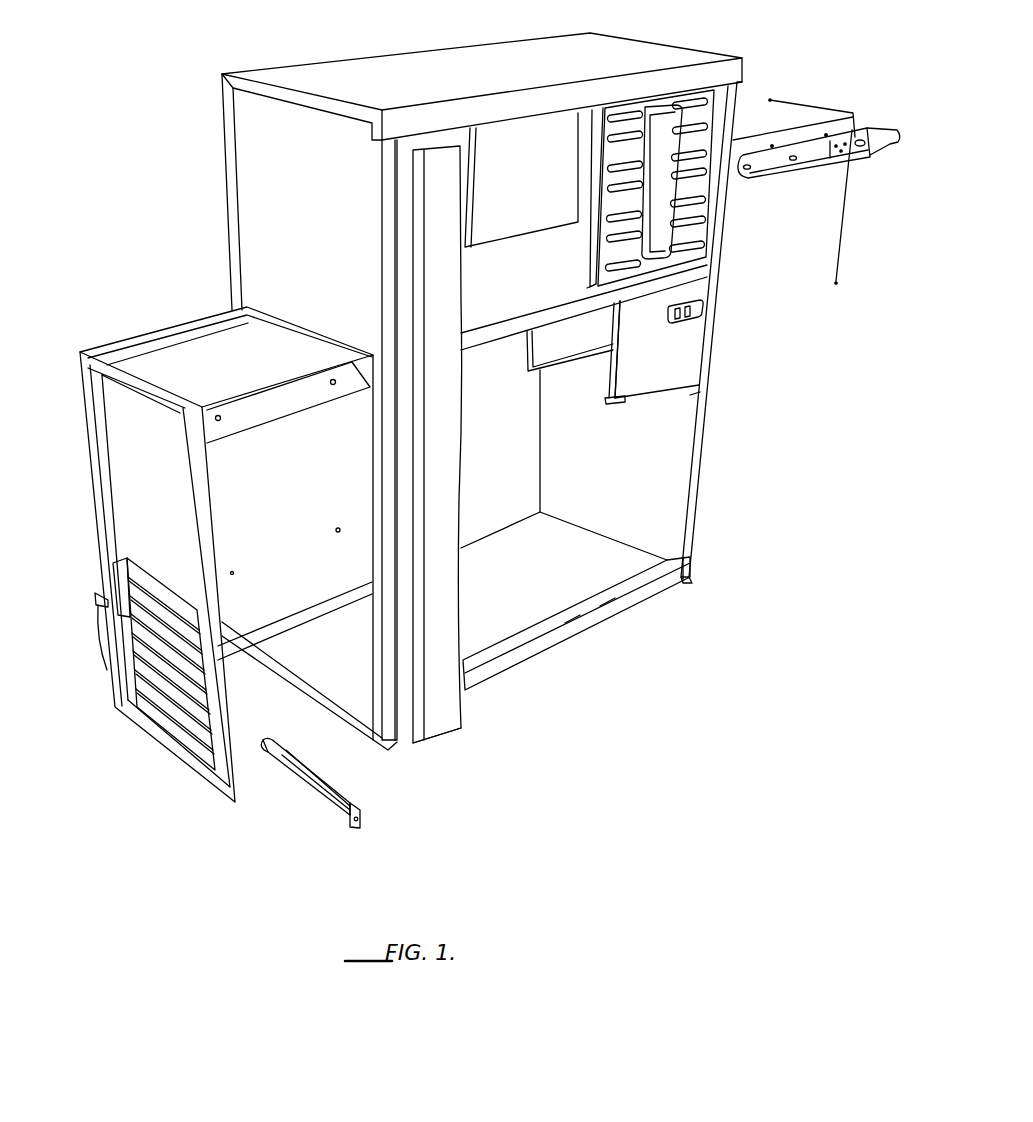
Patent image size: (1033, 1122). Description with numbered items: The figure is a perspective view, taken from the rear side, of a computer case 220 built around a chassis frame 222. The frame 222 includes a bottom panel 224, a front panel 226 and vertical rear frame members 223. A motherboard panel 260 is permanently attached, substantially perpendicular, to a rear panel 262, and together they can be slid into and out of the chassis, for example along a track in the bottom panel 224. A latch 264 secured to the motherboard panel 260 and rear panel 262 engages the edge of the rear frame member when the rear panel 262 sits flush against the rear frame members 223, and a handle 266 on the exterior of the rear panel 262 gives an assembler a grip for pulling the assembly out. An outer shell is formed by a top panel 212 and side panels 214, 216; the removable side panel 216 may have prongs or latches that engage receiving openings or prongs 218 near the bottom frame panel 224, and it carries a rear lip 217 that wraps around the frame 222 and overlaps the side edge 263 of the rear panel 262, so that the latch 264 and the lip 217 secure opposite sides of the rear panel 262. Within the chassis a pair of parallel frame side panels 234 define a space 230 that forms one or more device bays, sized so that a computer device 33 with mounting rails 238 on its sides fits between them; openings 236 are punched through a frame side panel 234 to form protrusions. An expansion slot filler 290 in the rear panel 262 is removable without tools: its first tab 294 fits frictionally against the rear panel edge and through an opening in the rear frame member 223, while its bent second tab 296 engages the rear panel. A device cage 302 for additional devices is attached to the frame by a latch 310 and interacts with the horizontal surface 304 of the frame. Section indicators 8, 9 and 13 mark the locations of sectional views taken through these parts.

The computer device 33 is at (816, 169).
The top panel 212 is at (370, 62).
The side panel 214 is at (243, 107).
The removable side panel 216 is at (447, 150).
The rear lip 217 is at (420, 748).
The receiving openings or prongs 218 is at (515, 642).
The computer case 220 is at (465, 406).
The frame 222 is at (700, 450).
The vertical rear frame members 223 is at (230, 146).
The bottom panel 224 is at (632, 562).
The front panel 226 is at (680, 410).
The space 230 is at (555, 128).
The frame side panels 234 is at (692, 156).
The openings 236 is at (720, 222).
The mounting rails 238 is at (817, 158).
The motherboard panel 260 is at (205, 560).
The rear panel 262 is at (102, 386).
The edge of the rear panel 263 is at (224, 786).
The latch 264 is at (102, 667).
The handle 266 is at (118, 560).
The expansion slot filler 290 is at (346, 783).
The first tab 294 is at (265, 740).
The second tab 296 is at (362, 824).
The device cage 302 is at (683, 360).
The horizontal surface 304 is at (534, 198).
The latch 310 is at (685, 313).
The section line 8- 8 is at (183, 561).
The section line 9- 9 is at (88, 593).
The section line 13- 13 is at (637, 300).